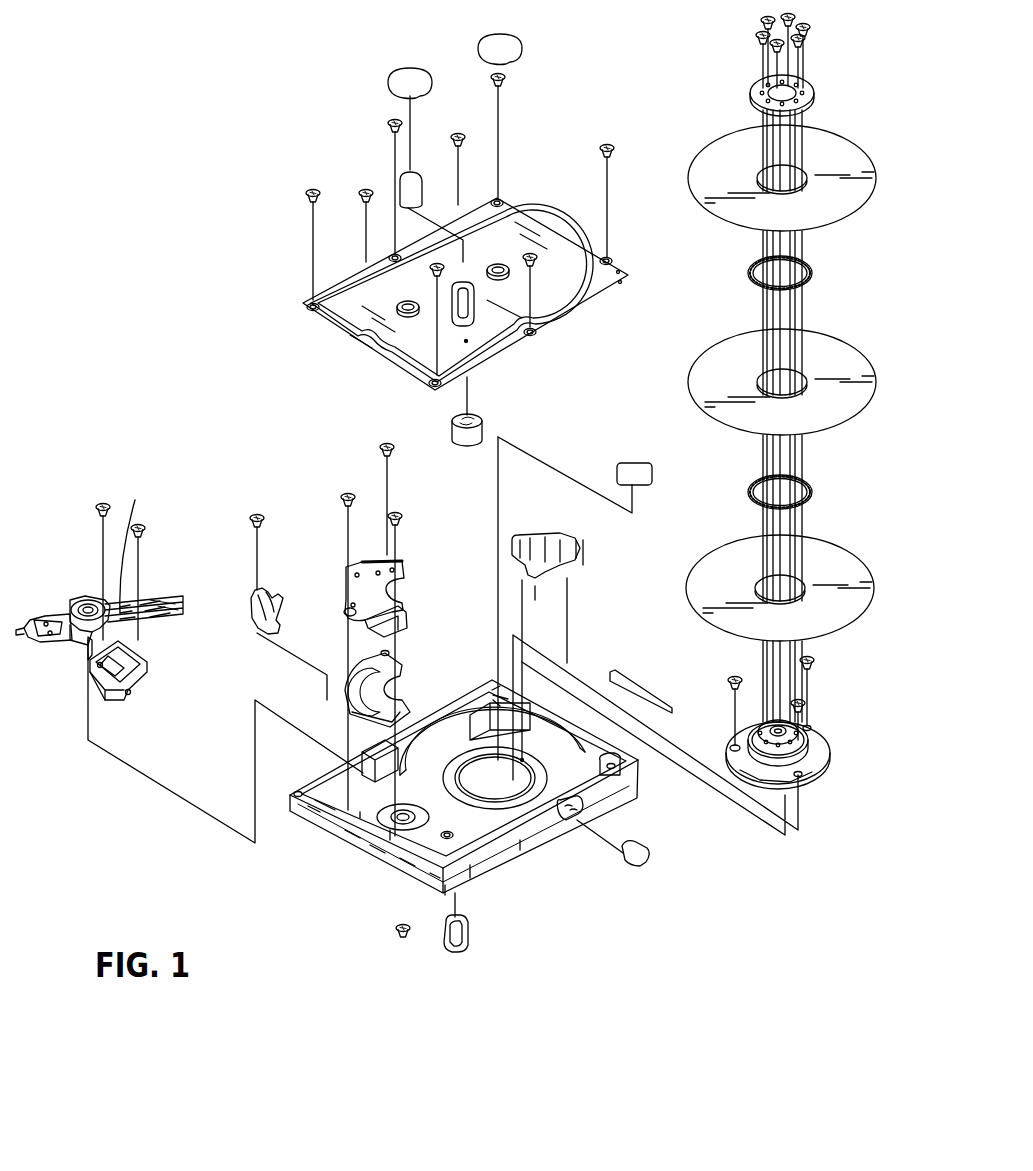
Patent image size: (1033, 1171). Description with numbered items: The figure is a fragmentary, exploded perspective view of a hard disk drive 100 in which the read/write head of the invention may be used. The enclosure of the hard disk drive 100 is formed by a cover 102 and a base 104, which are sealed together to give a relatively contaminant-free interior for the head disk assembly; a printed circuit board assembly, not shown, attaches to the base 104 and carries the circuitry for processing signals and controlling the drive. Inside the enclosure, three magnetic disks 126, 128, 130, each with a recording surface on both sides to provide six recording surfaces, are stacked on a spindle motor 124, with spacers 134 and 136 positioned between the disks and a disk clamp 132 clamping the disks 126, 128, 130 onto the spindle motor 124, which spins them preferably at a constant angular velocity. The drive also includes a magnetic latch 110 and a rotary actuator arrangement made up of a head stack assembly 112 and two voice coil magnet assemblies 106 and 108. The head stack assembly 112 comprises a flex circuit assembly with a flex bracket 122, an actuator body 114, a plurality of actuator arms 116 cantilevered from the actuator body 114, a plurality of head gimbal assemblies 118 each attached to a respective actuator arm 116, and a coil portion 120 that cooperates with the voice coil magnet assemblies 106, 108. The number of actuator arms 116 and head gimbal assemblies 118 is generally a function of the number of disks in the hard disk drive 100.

The hard disk drive 100 is at (179, 270).
The cover 102 is at (627, 291).
The base 104 is at (507, 869).
The voice coil magnet assembly 106 is at (345, 578).
The voice coil magnet assembly 108 is at (348, 688).
The magnetic latch 110 is at (278, 622).
The head stack assembly 112 is at (87, 565).
The actuator body 114 is at (80, 597).
The actuator arms 116 is at (136, 545).
The head gimbal assemblies 118 is at (172, 597).
The coil portion 120 is at (45, 648).
The flex bracket 122 is at (150, 672).
The spindle motor 124 is at (830, 752).
The magnetic disk 126 is at (702, 148).
The magnetic disk 128 is at (702, 357).
The magnetic disk 130 is at (699, 570).
The disk clamp 132 is at (751, 82).
The spacer 134 is at (749, 268).
The spacer 136 is at (747, 483).